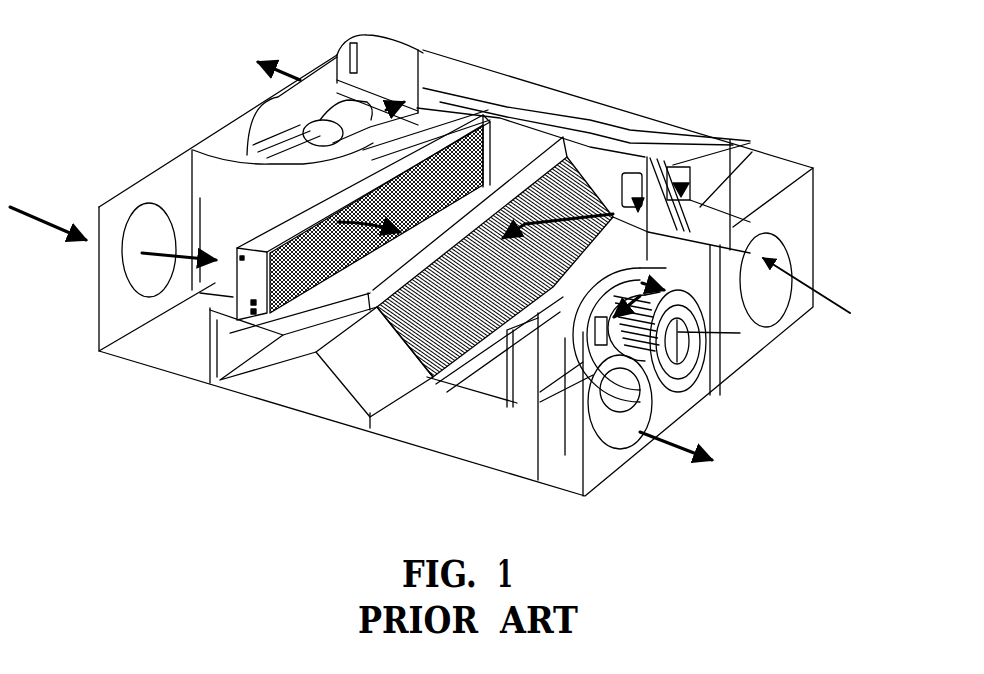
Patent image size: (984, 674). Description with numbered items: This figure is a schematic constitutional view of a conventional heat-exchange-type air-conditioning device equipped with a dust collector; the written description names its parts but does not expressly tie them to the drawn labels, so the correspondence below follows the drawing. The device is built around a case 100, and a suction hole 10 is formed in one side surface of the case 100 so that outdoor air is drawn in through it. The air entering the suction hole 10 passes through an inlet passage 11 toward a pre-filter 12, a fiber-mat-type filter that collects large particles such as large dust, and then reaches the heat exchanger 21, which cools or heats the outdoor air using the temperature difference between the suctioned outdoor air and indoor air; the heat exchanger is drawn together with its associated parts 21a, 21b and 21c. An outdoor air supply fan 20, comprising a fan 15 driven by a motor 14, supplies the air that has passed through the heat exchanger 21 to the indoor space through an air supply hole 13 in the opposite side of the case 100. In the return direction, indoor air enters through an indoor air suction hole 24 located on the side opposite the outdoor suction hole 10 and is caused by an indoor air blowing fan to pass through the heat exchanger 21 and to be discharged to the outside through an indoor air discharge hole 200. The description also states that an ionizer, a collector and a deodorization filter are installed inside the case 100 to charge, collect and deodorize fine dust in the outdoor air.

The housing 100 is at (797, 253).
The air inlet 10 is at (122, 260).
The inlet duct 11 is at (200, 300).
The filter 12 is at (340, 357).
The air outlet 13 is at (740, 335).
The motor 14 is at (700, 370).
The fan 15 is at (700, 397).
The blower 20 is at (568, 424).
The damper 21 is at (646, 156).
The damper actuator 21a is at (690, 167).
The damper plate 21b is at (752, 150).
The bypass passage 21c is at (578, 110).
The guide plate 24 is at (262, 145).
The exhaust duct 200 is at (340, 55).